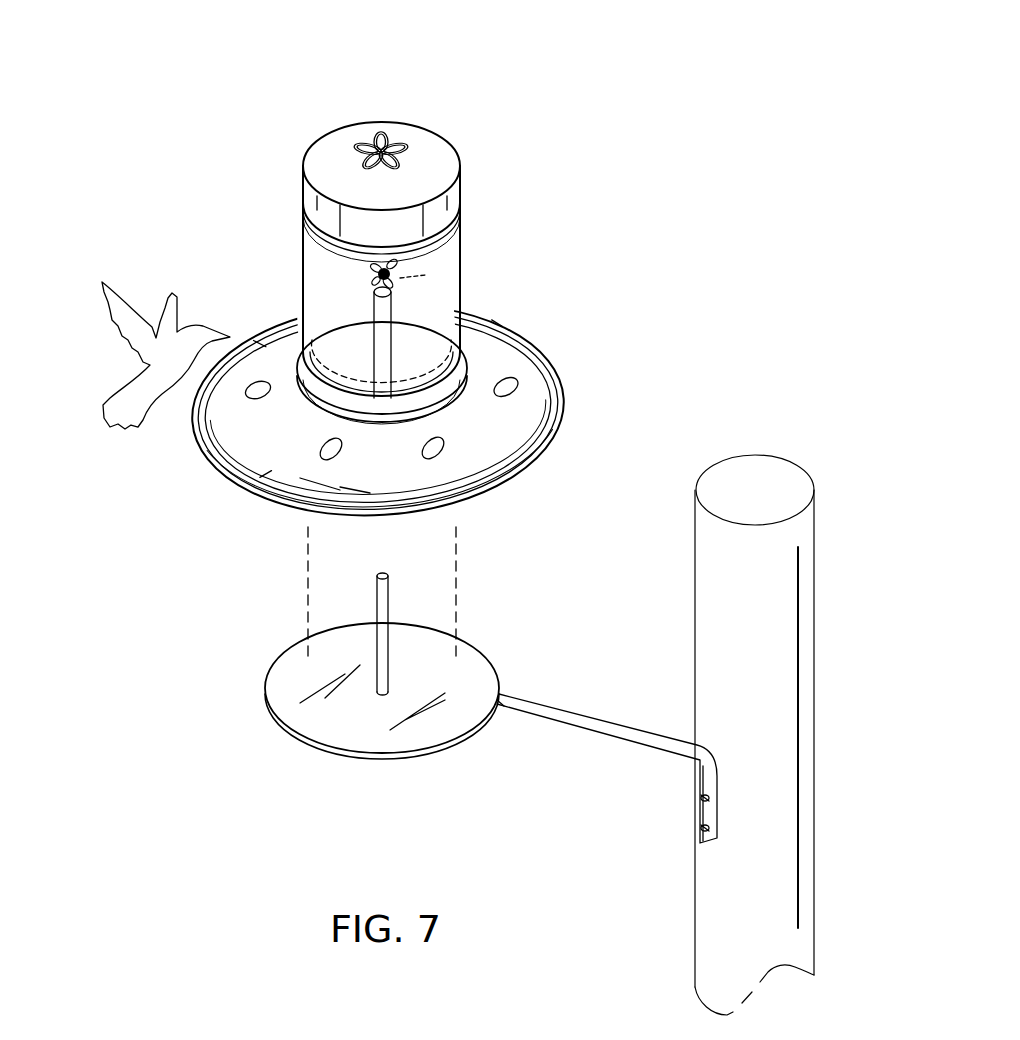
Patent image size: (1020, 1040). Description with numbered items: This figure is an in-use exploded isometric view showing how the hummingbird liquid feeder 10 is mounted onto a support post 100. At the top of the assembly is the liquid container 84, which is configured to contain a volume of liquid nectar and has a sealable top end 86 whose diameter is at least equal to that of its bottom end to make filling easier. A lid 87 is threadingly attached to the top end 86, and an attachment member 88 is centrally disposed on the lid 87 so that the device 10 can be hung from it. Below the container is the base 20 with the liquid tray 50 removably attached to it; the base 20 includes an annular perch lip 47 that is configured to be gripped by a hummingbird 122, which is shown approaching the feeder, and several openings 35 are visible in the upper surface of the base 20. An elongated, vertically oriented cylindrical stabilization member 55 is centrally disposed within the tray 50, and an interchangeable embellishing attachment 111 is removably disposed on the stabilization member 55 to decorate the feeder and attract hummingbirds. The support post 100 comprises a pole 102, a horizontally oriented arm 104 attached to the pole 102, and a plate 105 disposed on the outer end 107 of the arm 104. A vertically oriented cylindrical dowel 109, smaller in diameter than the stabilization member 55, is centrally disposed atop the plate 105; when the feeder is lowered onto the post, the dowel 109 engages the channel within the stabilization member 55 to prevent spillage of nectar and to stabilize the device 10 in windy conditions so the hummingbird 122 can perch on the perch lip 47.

The hummingbird liquid feeder 10 is at (312, 97).
The base 20 is at (525, 337).
The feeding ports 35 is at (515, 385).
The perch lip 47 is at (565, 397).
The liquid tray 50 is at (480, 498).
The stabilization member 55 is at (418, 333).
The liquid container 84 is at (462, 258).
The top end 86 is at (460, 238).
The lid 87 is at (453, 148).
The attachment member 88 is at (393, 138).
The support post 100 is at (805, 468).
The pole 102 is at (814, 645).
The arm 104 is at (628, 742).
The plate 105 is at (477, 645).
The outer end 107 is at (498, 712).
The dowel 109 is at (388, 597).
The embellishing attachment 111 is at (380, 270).
The hummingbird 122 is at (98, 325).